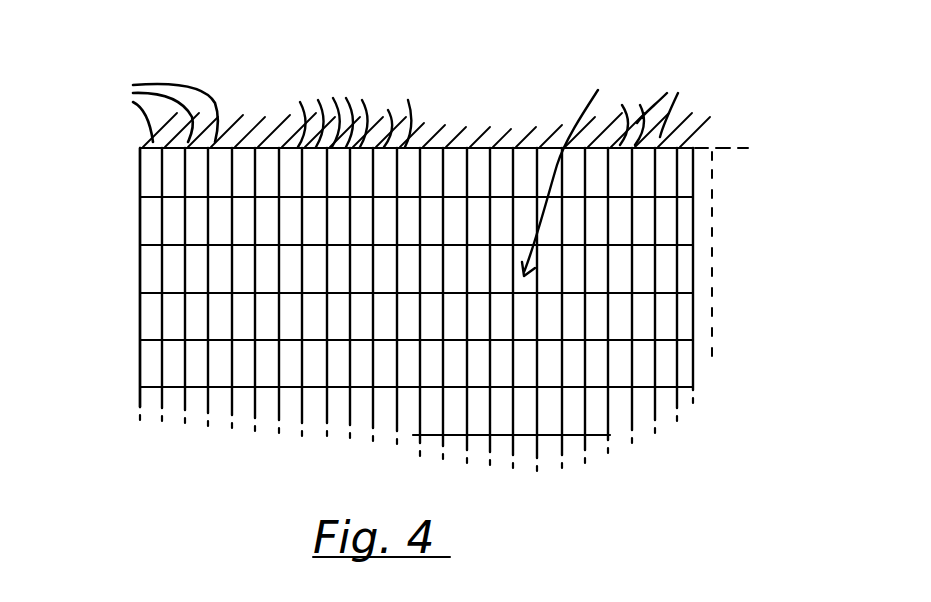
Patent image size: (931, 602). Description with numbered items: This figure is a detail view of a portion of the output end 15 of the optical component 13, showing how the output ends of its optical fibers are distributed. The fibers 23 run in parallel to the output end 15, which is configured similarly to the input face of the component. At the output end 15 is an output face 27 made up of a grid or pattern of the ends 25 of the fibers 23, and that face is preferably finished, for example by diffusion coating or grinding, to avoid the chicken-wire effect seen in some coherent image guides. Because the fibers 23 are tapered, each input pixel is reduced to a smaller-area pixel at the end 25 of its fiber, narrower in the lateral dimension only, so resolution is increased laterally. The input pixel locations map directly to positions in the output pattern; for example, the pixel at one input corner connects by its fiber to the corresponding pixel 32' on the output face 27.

The optical component 13 is at (667, 147).
The output end 15 is at (426, 115).
The optical fibers 23 is at (394, 103).
The ends of the fibers 25 is at (195, 316).
The output face 27 is at (584, 162).
The pixel at corner 32' is at (90, 277).